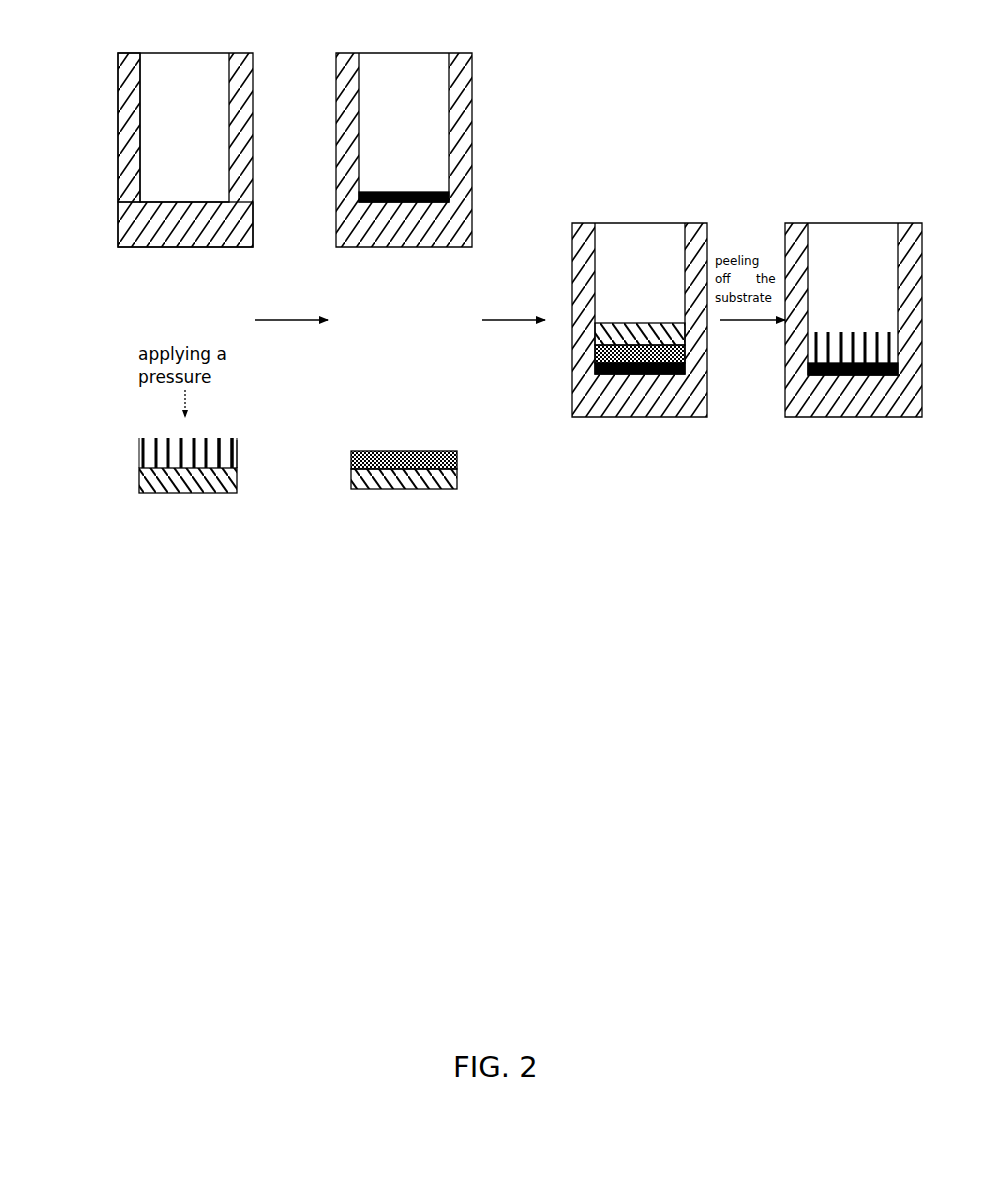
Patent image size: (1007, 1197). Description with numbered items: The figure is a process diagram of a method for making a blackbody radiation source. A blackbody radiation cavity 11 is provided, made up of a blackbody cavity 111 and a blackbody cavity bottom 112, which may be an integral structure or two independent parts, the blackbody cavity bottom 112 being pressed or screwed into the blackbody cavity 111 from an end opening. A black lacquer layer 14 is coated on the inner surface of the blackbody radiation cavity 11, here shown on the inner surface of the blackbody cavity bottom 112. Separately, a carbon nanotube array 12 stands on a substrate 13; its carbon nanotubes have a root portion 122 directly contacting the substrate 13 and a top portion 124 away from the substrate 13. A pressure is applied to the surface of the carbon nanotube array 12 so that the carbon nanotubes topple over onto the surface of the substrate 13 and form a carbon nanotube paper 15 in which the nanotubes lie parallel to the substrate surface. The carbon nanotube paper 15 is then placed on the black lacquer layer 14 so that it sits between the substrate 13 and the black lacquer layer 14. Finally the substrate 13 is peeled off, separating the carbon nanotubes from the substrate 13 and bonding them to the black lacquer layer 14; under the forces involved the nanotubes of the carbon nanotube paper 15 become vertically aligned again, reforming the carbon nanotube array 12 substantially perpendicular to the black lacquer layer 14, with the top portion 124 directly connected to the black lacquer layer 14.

The blackbody radiation cavity 11 is at (197, 52).
The blackbody cavity 111 is at (118, 148).
The blackbody cavity bottom 112 is at (160, 247).
The carbon nanotube array 12 is at (165, 438).
The root portion 122 is at (242, 463).
The top portion 124 is at (225, 437).
The substrate 13 is at (185, 492).
The black lacquer layer 14 is at (413, 190).
The carbon nanotube paper 15 is at (400, 451).